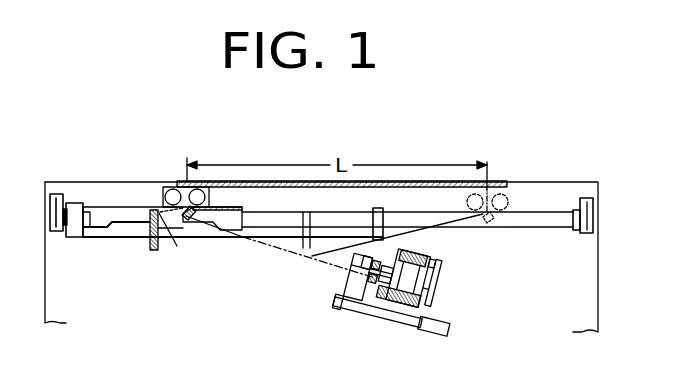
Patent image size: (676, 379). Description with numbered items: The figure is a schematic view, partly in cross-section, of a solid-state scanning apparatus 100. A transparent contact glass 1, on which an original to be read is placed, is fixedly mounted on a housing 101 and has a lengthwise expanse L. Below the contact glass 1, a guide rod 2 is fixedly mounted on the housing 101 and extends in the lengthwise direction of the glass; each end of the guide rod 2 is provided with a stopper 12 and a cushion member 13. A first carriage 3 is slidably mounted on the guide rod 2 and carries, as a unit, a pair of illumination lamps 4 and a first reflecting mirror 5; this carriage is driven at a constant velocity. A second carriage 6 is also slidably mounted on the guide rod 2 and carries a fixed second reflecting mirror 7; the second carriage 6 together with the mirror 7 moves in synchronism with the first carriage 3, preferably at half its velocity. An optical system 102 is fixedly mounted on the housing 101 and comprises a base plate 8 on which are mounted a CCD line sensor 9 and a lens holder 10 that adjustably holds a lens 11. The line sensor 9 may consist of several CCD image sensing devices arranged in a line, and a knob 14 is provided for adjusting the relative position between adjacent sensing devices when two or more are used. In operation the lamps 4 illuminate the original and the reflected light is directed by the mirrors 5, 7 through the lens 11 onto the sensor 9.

The contact glass 1 is at (422, 188).
The guide rod 2 is at (528, 221).
The first carriage 3 is at (244, 211).
The illumination lamps 4 is at (170, 191).
The first reflecting mirror 5 is at (189, 224).
The second carriage 6 is at (105, 240).
The second reflecting mirror 7 is at (159, 246).
The base plate 8 is at (434, 326).
The CCD line sensor 9 is at (377, 311).
The lens holder 10 is at (406, 278).
The lens 11 is at (357, 276).
The stopper 12 is at (50, 194).
The cushion member 13 is at (67, 204).
The knob 14 is at (430, 282).
The solid-state scanning apparatus 100 is at (95, 353).
The housing 101 is at (583, 285).
The optical system 102 is at (417, 296).